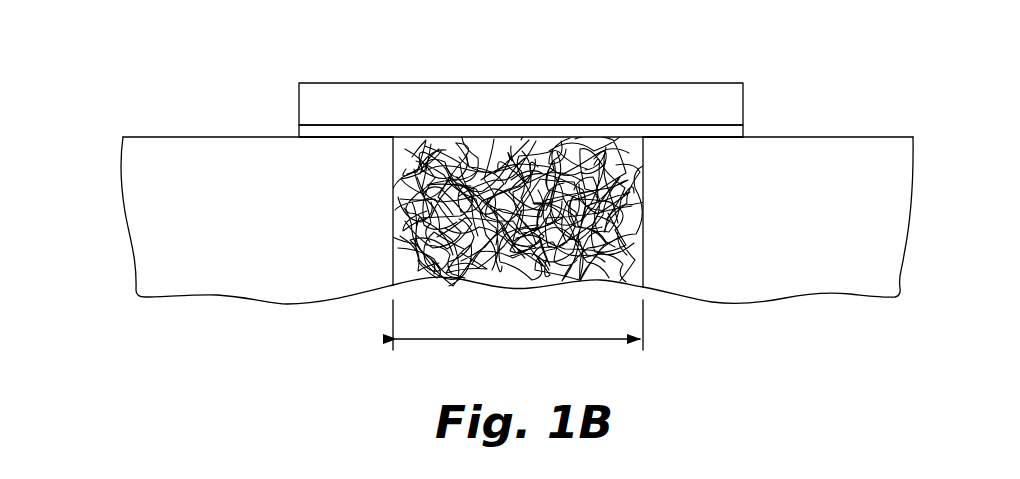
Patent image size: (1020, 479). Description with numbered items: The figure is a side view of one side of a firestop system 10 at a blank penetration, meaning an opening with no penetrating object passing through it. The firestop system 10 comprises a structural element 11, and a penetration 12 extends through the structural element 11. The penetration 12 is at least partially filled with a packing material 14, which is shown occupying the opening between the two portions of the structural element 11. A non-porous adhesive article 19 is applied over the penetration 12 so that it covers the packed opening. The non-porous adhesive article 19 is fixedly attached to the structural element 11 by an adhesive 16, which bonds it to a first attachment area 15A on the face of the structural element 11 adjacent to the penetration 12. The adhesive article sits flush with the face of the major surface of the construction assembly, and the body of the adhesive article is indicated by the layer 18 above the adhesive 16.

The firestop system 10 is at (833, 68).
The structural element 11 is at (147, 223).
The penetration 12 is at (517, 342).
The packing material 14 is at (393, 230).
The first attachment area 15A is at (327, 139).
The adhesive 16 is at (732, 130).
The conductive pad 18 is at (693, 98).
The non-porous adhesive article 19 is at (297, 105).